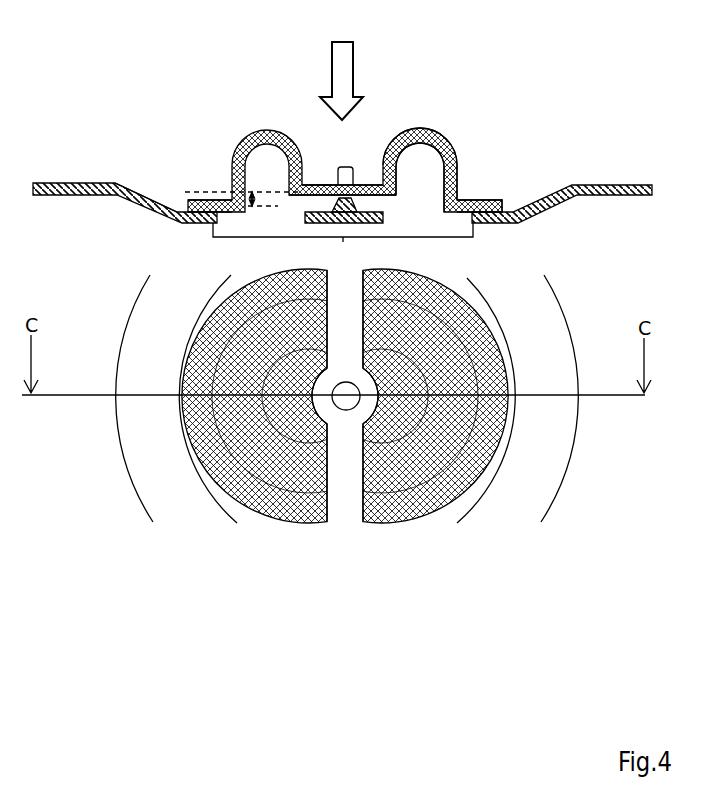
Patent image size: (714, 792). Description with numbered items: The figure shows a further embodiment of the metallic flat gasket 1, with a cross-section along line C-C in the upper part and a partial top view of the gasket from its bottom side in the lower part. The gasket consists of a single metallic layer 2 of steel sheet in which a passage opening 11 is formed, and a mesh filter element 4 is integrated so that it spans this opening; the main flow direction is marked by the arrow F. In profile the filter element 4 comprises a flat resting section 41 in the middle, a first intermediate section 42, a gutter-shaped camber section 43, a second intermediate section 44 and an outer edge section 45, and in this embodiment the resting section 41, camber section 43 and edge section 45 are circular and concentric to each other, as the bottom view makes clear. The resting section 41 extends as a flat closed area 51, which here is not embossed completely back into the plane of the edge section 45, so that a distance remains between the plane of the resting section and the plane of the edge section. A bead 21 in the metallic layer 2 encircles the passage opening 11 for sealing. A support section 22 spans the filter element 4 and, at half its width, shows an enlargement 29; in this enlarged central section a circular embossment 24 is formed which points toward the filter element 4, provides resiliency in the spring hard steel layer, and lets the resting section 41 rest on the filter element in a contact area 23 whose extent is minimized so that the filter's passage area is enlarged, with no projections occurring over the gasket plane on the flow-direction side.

The metallic flat gasket 1 is at (75, 149).
The metallic layer 2 is at (628, 185).
The filter element 4 is at (452, 170).
The passage opening 11 is at (343, 244).
The bead 21 is at (133, 203).
The support section 22 is at (346, 495).
The contact area 23 is at (345, 167).
The circular embossment 24 is at (383, 215).
The enlargement 29 is at (365, 383).
The resting section 41 is at (370, 187).
The first intermediate section 42 is at (397, 145).
The camber section 43 is at (418, 140).
The second intermediate section 44 is at (442, 137).
The edge section 45 is at (480, 203).
The closed area 51 is at (320, 187).